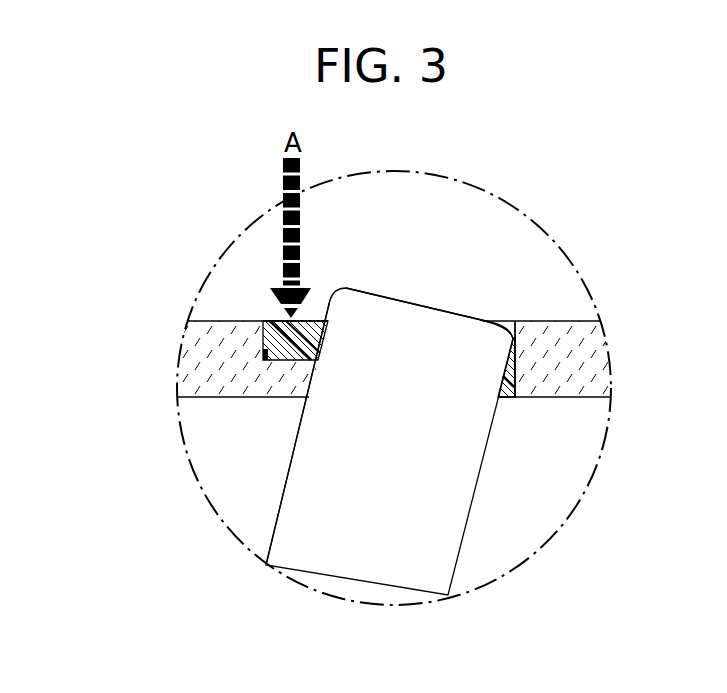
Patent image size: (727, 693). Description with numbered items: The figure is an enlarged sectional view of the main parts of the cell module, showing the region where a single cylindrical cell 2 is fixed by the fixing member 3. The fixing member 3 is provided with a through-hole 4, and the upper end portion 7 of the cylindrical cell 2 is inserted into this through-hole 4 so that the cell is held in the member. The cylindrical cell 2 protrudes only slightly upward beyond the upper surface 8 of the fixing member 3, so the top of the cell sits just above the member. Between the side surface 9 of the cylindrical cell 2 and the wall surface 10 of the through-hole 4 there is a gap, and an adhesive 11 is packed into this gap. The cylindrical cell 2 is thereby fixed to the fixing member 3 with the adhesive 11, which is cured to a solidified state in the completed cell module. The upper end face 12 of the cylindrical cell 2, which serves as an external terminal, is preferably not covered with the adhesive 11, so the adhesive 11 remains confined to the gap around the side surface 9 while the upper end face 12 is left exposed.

The cylindrical cell 2 is at (390, 506).
The fixing member 3 is at (232, 321).
The through-hole 4 is at (266, 302).
The upper end portion 7 is at (398, 328).
The upper surface 8 is at (535, 321).
The side surface 9 is at (287, 483).
The wall surface 10 is at (263, 343).
The adhesive 11 is at (313, 321).
The upper end face 12 is at (453, 313).